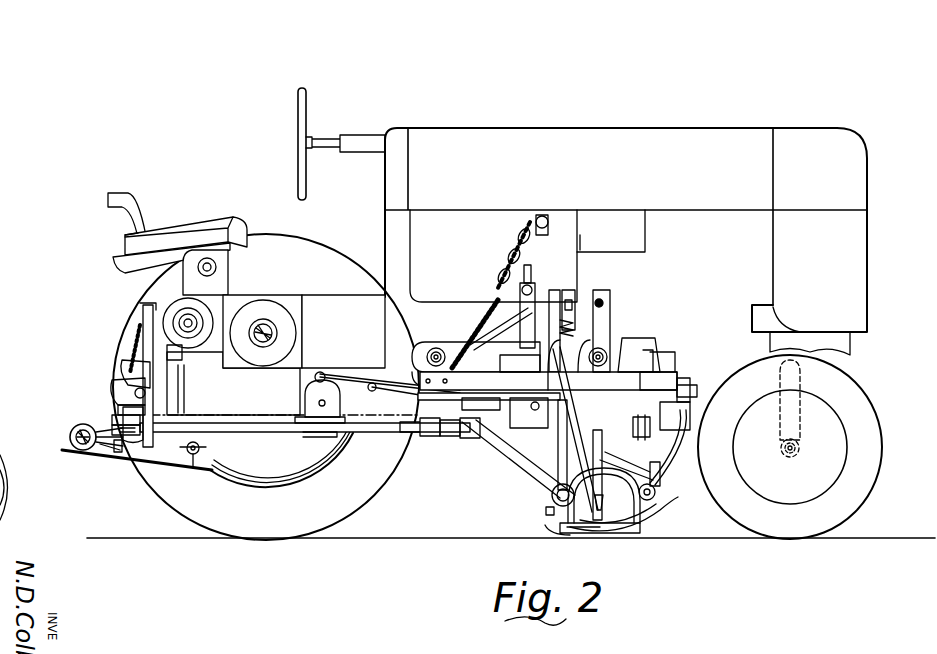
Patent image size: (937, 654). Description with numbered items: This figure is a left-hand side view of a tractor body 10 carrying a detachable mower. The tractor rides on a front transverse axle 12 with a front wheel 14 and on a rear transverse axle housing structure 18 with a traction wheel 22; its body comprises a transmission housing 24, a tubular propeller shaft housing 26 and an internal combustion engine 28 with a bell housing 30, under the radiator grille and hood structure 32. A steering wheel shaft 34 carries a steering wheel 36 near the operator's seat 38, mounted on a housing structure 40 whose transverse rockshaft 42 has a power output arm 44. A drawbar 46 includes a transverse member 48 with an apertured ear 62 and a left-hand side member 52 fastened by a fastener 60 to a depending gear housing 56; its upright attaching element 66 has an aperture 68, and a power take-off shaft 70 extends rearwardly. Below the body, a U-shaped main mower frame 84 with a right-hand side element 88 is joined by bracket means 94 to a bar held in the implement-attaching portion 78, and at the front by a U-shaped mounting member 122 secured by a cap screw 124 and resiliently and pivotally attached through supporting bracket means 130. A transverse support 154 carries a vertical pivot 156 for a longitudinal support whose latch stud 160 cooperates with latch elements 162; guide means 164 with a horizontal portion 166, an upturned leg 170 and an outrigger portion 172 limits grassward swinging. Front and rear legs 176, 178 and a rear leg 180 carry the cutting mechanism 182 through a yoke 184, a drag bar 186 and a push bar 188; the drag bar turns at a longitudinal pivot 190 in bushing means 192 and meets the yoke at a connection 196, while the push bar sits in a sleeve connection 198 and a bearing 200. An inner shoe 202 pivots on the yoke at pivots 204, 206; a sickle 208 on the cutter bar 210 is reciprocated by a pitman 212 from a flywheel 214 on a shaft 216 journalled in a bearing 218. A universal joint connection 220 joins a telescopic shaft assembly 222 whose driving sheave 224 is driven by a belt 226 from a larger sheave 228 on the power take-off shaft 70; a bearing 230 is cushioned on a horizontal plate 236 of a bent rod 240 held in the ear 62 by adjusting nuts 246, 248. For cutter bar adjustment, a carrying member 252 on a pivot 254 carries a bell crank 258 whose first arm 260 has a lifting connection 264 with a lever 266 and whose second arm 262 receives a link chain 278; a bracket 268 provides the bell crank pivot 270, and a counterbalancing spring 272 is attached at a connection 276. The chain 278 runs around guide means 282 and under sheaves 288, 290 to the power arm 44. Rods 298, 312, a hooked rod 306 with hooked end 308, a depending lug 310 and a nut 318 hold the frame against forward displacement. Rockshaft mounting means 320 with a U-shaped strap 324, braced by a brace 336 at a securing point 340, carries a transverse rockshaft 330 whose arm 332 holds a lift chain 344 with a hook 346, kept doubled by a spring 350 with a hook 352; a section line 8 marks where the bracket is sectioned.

The section line 8 is at (460, 332).
The tractor body 10 is at (365, 288).
The transverse axle 12 is at (802, 376).
The right-hand front wheel 14 is at (860, 510).
The transverse axle housing structure 18 is at (275, 295).
The left-hand traction wheel 22 is at (370, 503).
The transmission housing 24 is at (318, 300).
The tubular propeller shaft housing 26 is at (425, 272).
The internal combustion engine 28 is at (650, 224).
The bell housing 30 is at (585, 252).
The radiator grille and hood structure 32 is at (620, 128).
The steering wheel shaft 34 is at (363, 135).
The steering wheel 36 is at (306, 95).
The operator's seat 38 is at (203, 218).
The housing structure 40 is at (218, 266).
The transverse rockshaft 42 is at (212, 273).
The power output arm 44 is at (165, 302).
The drawbar 46 is at (275, 486).
The transverse member 48 is at (70, 437).
The left-hand side member 52 is at (302, 478).
The left-hand gear housing 56 is at (218, 377).
The fastener 60 is at (192, 470).
The apertured ear 62 is at (92, 450).
The upright attaching element 66 is at (328, 378).
The aperture 68 is at (320, 372).
The power take-off shaft 70 is at (184, 355).
The right-hand implement-attaching portion 78 is at (420, 345).
The main mower frame 84 is at (667, 365).
The right-hand side element 88 is at (670, 375).
The bracket means 94 is at (440, 340).
The U-shaped mounting member 122 is at (612, 296).
The cap screw 124 is at (605, 303).
The supporting bracket means 130 is at (611, 346).
The transverse support 154 is at (458, 437).
The pivot 156 is at (474, 441).
The latch stud 160 is at (690, 393).
The releasable latch elements 162 is at (692, 400).
The limit or guide means 164 is at (623, 418).
The transverse horizontal portion 166 is at (592, 372).
The upturned leg 170 is at (606, 352).
The outrigger portion 172 is at (648, 350).
The front leg 176 is at (667, 428).
The rear leg 178 is at (557, 452).
The rear depending supporting element 180 is at (480, 410).
The mower cutting mechanism 182 is at (539, 533).
The yoke 184 is at (660, 474).
The drag bar 186 is at (660, 486).
The push bar 188 is at (497, 470).
The longitudinal pivot 190 is at (680, 410).
The bushing means 192 is at (673, 418).
The drag bar connection 196 is at (650, 498).
The sleeve connection 198 is at (552, 497).
The bearing 200 is at (500, 455).
The inner ground-engaging shoe 202 is at (645, 528).
The pivot 204 is at (547, 512).
The pivot 206 is at (655, 518).
The sickle 208 is at (615, 535).
The cutter bar 210 is at (566, 533).
The pitman 212 is at (600, 505).
The flywheel 214 is at (618, 455).
The flywheel shaft 216 is at (603, 440).
The longitudinal bearing 218 is at (540, 436).
The universal joint connection 220 is at (440, 435).
The telescopic shaft assembly 222 is at (400, 433).
The driving sheave 224 is at (150, 463).
The driving belt 226 is at (148, 360).
The larger sheave 228 is at (140, 385).
The bearing 230 is at (135, 432).
The horizontal plate 236 is at (120, 410).
The bent rod 240 is at (110, 420).
The upper adjusting and lock nut 246 is at (110, 428).
The lower adjusting and lock nut 248 is at (108, 455).
The carrying member 252 is at (512, 365).
The pivot 254 is at (520, 350).
The bell crank 258 is at (569, 276).
The first arm 260 is at (547, 390).
The second arm 262 is at (578, 293).
The lifting connection 264 is at (520, 468).
The lever 266 is at (528, 482).
The bracket 268 is at (604, 340).
The pivot 270 is at (510, 388).
The counterbalancing and assist spring 272 is at (576, 327).
The spring connection 276 is at (568, 311).
The link chain 278 is at (150, 345).
The guide means 282 is at (520, 420).
The sheave 288 is at (305, 397).
The sheave 290 is at (128, 395).
The rod 298 is at (381, 382).
The second rod 306 is at (371, 383).
The hooked rear end 308 is at (325, 372).
The depending lug 310 is at (437, 398).
The rod 312 is at (416, 396).
The nut 318 is at (484, 388).
The rockshaft mounting means 320 is at (555, 218).
The U-shaped strap 324 is at (520, 303).
The transverse rockshaft 330 is at (530, 298).
The power-transmitting arm 332 is at (531, 280).
The right-hand brace 336 is at (489, 303).
The brace securing point 340 is at (466, 320).
The lift chain 344 is at (520, 226).
The hook 346 is at (548, 224).
The spring 350 is at (480, 305).
The hook 352 is at (497, 283).